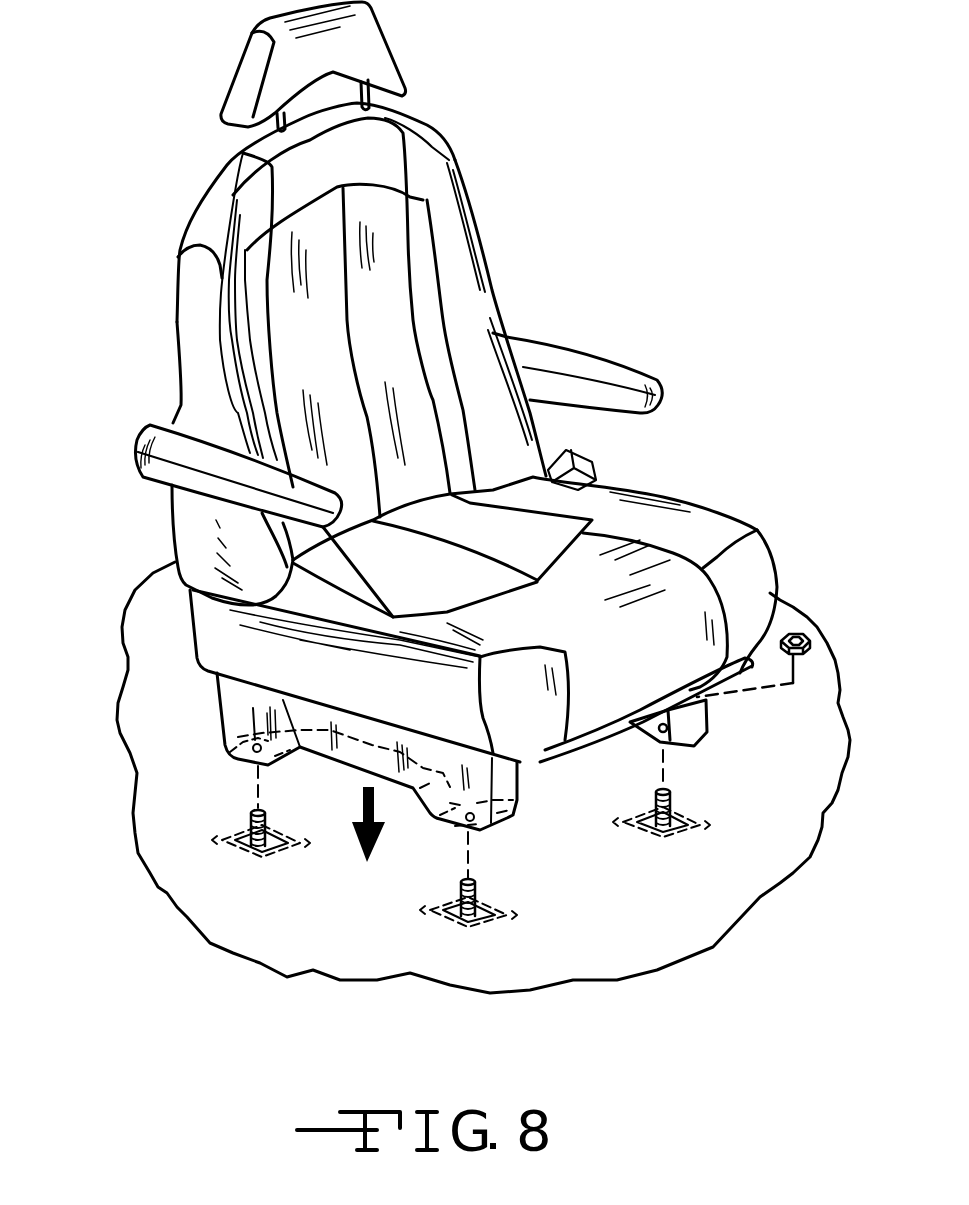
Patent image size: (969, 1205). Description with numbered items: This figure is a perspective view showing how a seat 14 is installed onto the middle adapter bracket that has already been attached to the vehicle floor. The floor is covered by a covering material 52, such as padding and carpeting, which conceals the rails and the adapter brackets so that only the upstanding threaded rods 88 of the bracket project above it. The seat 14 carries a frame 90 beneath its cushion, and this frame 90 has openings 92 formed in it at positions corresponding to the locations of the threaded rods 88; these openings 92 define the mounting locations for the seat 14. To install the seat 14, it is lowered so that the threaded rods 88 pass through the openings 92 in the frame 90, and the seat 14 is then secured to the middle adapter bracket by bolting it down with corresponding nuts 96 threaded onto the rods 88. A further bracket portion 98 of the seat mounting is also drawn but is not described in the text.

The seat 14 is at (165, 282).
The covering material 52 is at (700, 898).
The threaded rods 88 is at (252, 842).
The frame 90 is at (263, 708).
The openings 92 is at (240, 760).
The nuts 96 is at (812, 641).
The front mounting bracket 98 is at (516, 810).